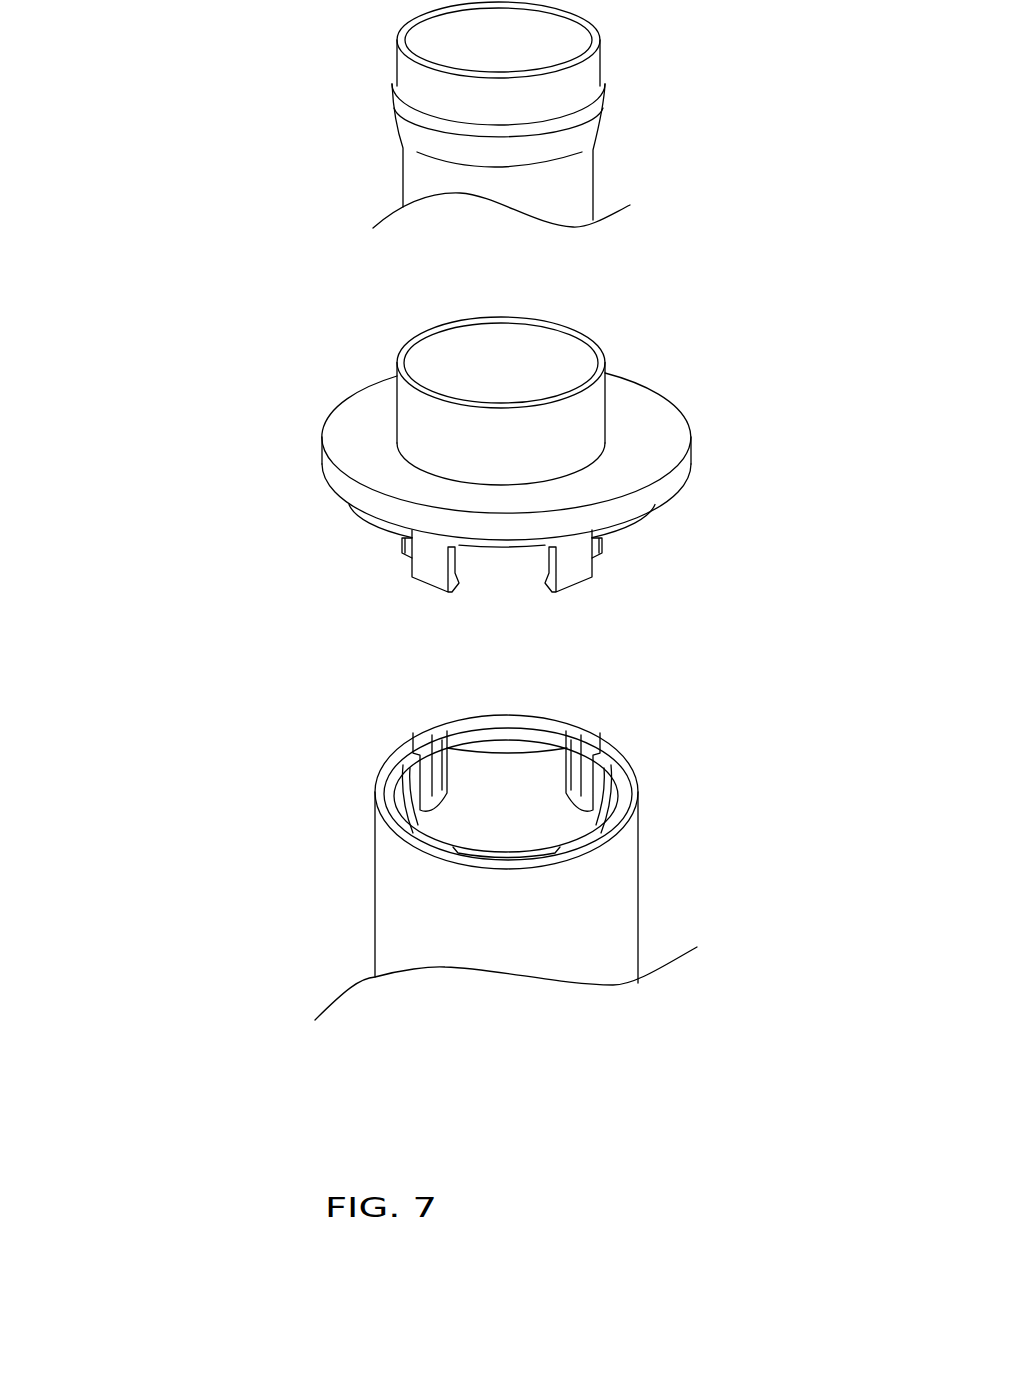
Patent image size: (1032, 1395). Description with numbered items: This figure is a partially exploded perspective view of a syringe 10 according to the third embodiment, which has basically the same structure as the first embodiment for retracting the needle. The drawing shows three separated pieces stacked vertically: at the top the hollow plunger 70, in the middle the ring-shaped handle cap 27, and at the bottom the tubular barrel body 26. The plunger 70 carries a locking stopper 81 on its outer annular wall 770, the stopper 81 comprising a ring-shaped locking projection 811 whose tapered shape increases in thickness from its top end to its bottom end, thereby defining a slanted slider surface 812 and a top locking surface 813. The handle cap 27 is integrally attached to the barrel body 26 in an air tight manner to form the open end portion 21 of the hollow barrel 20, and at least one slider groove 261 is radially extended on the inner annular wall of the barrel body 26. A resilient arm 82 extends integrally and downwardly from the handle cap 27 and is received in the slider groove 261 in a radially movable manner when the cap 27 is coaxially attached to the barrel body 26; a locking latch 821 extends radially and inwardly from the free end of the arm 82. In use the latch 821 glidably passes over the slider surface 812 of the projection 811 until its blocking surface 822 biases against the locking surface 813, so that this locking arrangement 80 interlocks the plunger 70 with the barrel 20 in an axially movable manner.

The syringe 10 is at (108, 196).
The hollow barrel 20 is at (439, 681).
The open end portion 21 is at (478, 776).
The tubular barrel body 26 is at (612, 898).
The slider groove 261 is at (740, 735).
The handle cap 27 is at (330, 473).
The hollow plunger 70 is at (494, 115).
The outer annular wall 770 is at (238, 135).
The locking means 80 is at (560, 406).
The locking stopper 81 is at (569, 111).
The locking projection 811 is at (407, 123).
The slider surface 812 is at (573, 137).
The locking surface 813 is at (585, 108).
The resilient arm 82 is at (507, 604).
The locking latch 821 is at (553, 593).
The blocking surface 822 is at (404, 638).